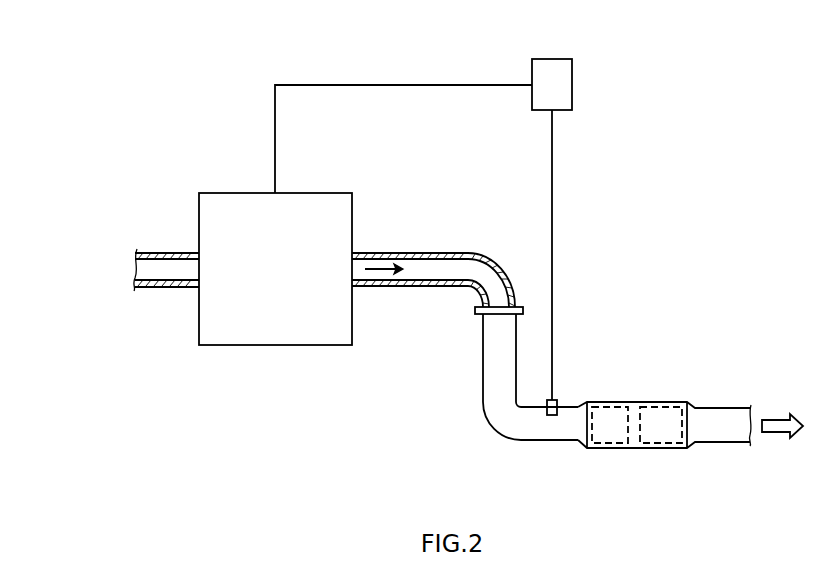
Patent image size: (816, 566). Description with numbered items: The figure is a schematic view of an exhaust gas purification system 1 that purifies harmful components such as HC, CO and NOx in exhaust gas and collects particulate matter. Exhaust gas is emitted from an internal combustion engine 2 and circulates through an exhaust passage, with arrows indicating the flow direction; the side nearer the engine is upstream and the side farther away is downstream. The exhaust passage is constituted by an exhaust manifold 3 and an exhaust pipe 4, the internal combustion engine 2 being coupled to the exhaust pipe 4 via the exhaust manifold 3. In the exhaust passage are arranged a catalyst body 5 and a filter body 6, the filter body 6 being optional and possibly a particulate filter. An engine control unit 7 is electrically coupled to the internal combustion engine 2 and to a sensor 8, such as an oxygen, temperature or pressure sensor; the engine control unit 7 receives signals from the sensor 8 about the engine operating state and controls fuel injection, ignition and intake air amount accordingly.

The exhaust gas purification system 1 is at (668, 92).
The internal combustion engine 2 is at (262, 347).
The exhaust manifold 3 is at (440, 252).
The exhaust pipe 4 is at (483, 357).
The catalyst body 5 is at (608, 402).
The filter body 6 is at (657, 402).
The engine control unit (ECU) 7 is at (572, 77).
The sensor 8 is at (556, 416).